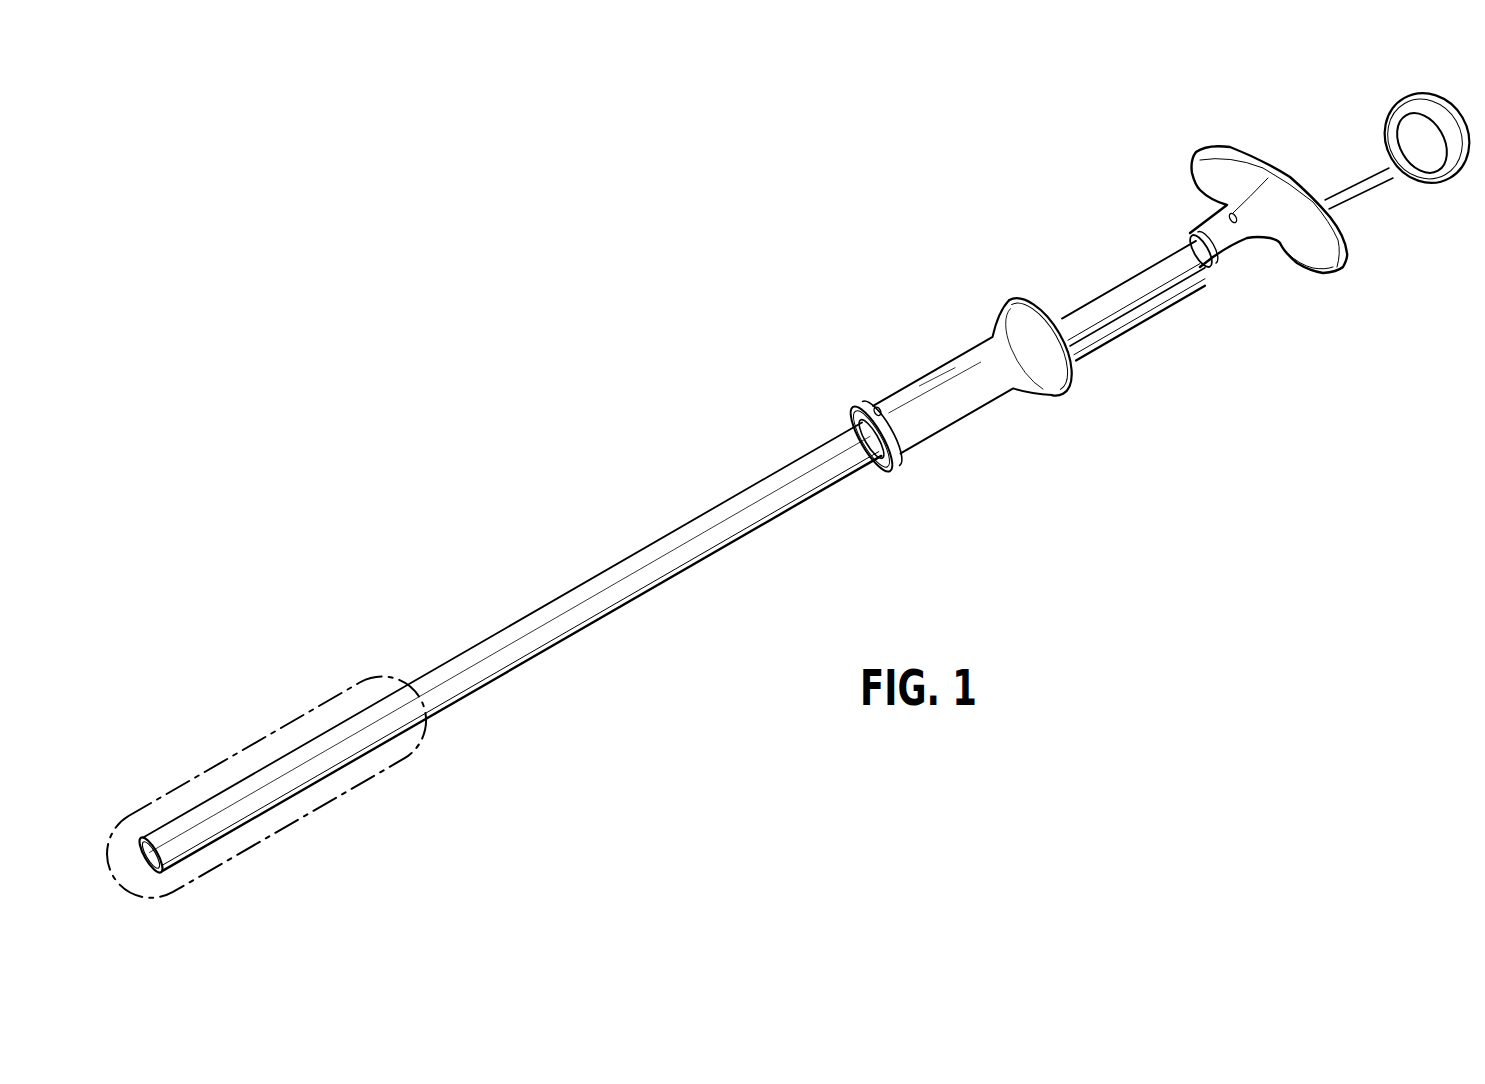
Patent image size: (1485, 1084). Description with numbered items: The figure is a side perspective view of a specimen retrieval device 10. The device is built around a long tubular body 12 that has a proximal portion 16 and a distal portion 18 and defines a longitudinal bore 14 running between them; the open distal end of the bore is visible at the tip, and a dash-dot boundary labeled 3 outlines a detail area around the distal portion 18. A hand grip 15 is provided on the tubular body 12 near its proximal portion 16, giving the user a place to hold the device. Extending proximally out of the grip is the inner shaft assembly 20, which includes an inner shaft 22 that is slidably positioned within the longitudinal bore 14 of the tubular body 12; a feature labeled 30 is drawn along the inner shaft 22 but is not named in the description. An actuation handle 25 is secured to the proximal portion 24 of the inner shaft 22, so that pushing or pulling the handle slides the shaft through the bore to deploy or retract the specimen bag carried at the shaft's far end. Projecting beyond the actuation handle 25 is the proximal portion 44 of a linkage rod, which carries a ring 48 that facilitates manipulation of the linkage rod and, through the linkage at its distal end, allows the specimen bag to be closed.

The region shown in FIG. 3 is at (242, 750).
The specimen retrieval device 10 is at (729, 462).
The tubular body 12 is at (508, 687).
The longitudinal bore 14 is at (150, 862).
The hand grip 15 is at (960, 372).
The proximal portion 16 is at (836, 447).
The distal portion 18 is at (190, 857).
The inner shaft assembly 20 is at (1137, 258).
The inner shaft 22 is at (1133, 301).
The proximal portion 24 is at (1181, 247).
The actuation handle 25 is at (1278, 205).
The slot in plunger shaft 30 is at (1163, 310).
The proximal portion 44 is at (1373, 172).
The ring 48 is at (1450, 118).